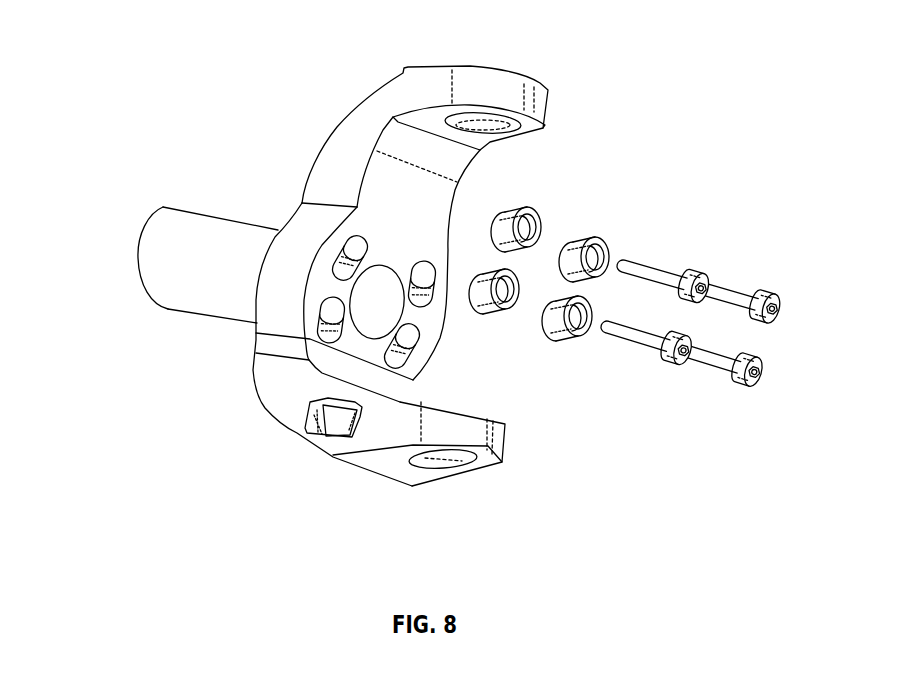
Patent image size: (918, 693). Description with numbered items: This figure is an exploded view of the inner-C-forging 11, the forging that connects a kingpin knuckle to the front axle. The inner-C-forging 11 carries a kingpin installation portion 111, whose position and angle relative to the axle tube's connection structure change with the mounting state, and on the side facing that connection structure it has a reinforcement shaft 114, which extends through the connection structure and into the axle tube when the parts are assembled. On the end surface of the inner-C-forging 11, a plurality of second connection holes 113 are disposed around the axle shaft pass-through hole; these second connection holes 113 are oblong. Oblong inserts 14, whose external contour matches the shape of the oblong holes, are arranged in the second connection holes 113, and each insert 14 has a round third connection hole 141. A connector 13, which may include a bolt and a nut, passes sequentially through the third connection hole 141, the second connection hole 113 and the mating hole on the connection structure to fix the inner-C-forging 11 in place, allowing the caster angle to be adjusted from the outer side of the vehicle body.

The inner-C-forging 11 is at (286, 244).
The kingpin installation portion 111 is at (487, 127).
The second connection hole 113 is at (330, 318).
The reinforcement shaft 114 is at (184, 243).
The connector 13 is at (668, 282).
The oblong insert 14 is at (520, 212).
The third connection hole 141 is at (580, 338).